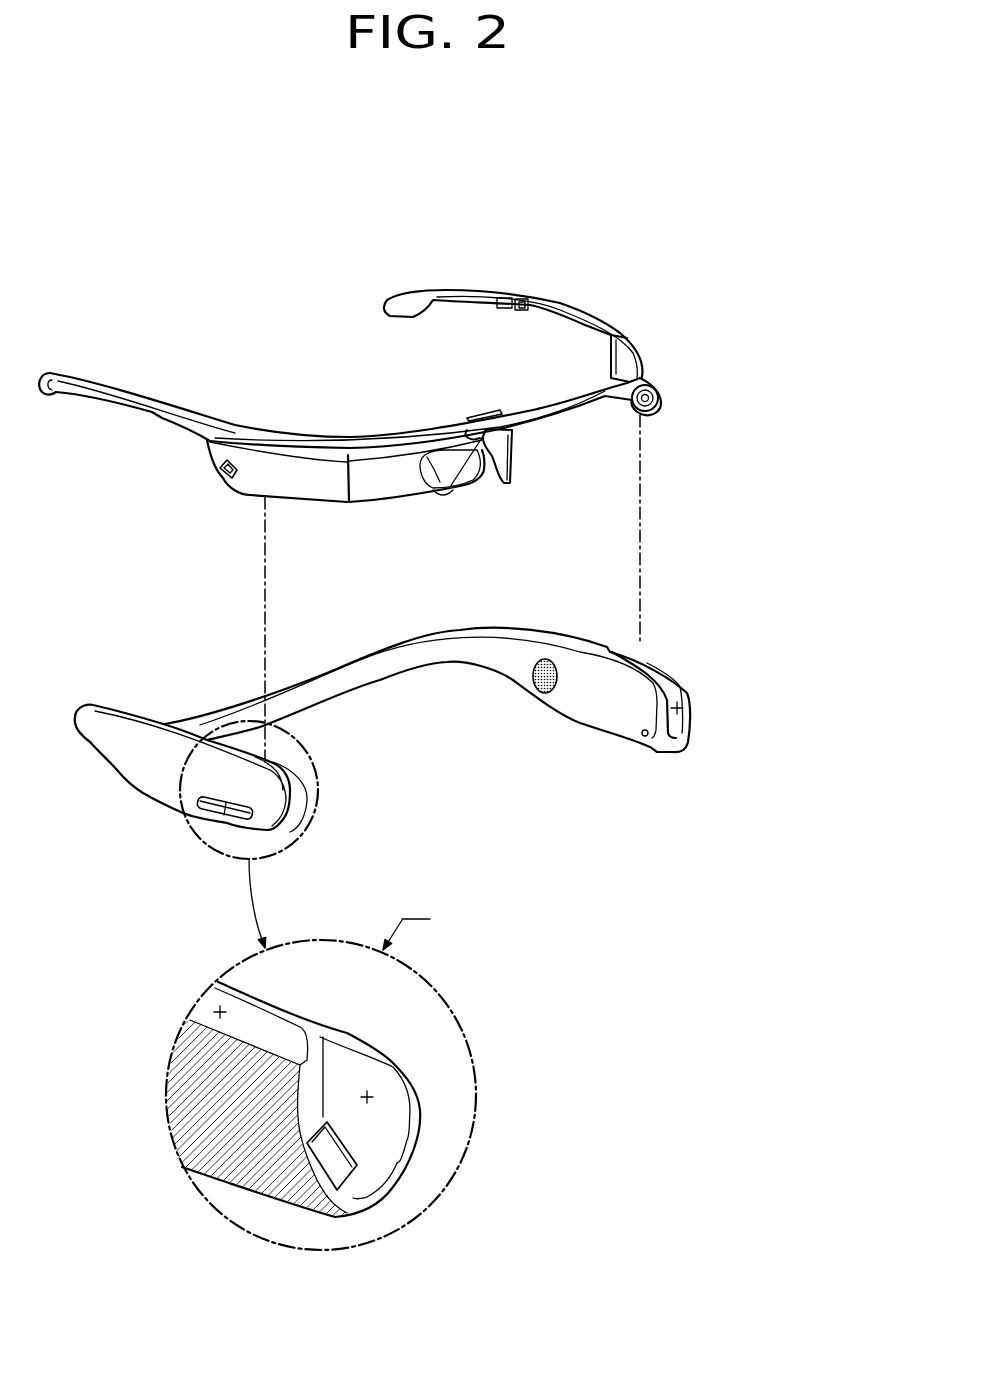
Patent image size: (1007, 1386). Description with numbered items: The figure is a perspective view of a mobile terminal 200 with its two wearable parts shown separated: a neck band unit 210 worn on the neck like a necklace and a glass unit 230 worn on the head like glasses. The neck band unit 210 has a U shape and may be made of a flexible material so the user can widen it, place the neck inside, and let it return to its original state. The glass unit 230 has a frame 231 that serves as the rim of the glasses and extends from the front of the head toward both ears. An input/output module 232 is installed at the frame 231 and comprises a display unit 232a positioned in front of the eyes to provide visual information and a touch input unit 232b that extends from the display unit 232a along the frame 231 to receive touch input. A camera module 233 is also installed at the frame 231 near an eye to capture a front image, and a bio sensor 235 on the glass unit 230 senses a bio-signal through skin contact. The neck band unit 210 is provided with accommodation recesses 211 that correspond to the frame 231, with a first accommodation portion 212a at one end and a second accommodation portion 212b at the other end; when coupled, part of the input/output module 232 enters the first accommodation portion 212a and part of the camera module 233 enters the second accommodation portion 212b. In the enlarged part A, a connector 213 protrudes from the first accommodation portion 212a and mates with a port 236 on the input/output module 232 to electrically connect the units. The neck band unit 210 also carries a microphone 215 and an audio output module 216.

The mobile terminal 200 is at (803, 292).
The neck band unit 210 is at (708, 663).
The accommodation recess 211 is at (220, 1012).
The first accommodation portion 212a is at (368, 1097).
The second accommodation portion 212b is at (682, 710).
The connector 213 is at (338, 1175).
The microphone 215 is at (643, 737).
The audio output module 216 is at (547, 683).
The glass unit 230 is at (708, 333).
The frame 231 is at (545, 413).
The input/output module 232 is at (423, 566).
The display unit 232a is at (390, 497).
The touch input unit 232b is at (327, 497).
The camera module 233 is at (653, 404).
The bio sensor 235 is at (527, 300).
The port 236 is at (218, 473).